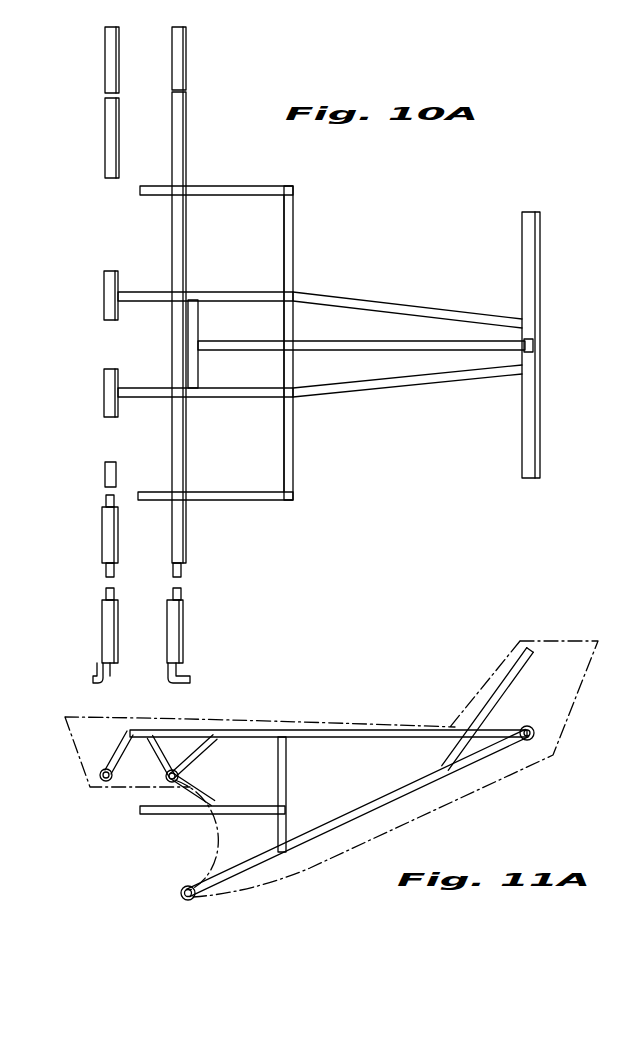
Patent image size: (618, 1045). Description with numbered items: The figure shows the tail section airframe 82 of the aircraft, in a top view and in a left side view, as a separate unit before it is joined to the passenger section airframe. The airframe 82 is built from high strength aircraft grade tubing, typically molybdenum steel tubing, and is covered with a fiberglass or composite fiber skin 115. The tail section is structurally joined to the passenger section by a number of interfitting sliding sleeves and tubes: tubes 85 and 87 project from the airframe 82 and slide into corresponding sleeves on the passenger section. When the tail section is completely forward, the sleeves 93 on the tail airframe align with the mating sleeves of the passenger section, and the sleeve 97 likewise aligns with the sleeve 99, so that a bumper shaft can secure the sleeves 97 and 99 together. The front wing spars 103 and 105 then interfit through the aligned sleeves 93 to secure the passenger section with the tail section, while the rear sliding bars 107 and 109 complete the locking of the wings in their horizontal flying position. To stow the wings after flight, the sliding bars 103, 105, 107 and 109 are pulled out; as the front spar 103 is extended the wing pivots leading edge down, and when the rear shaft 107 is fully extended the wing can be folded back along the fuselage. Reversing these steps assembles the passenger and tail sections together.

In FIG. 10A, the tail section airframe 82 is at (445, 240).
In FIG. 11A, the tail section airframe 82 is at (397, 656).
In FIG. 10A, the tube 85 is at (205, 186).
In FIG. 10A, the tube 87 is at (150, 492).
In FIG. 11A, the tube 87 is at (168, 814).
In FIG. 10A, the sleeve 93 is at (104, 300).
In FIG. 11A, the sleeve 93 is at (99, 776).
In FIG. 10A, the sleeve 97 is at (199, 330).
In FIG. 11A, the sleeve 97 is at (188, 901).
In FIG. 11A, the sleeve 99 is at (6, 901).
In FIG. 10A, the front wing spar 103 is at (104, 117).
In FIG. 10A, the front wing spar 105 is at (102, 606).
In FIG. 10A, the rear shaft 107 is at (187, 105).
In FIG. 10A, the sliding bar 109 is at (184, 602).
In FIG. 11A, the sliding bar 109 is at (167, 779).
In FIG. 11A, the fiberglass or composite fiber skin 115 is at (322, 728).